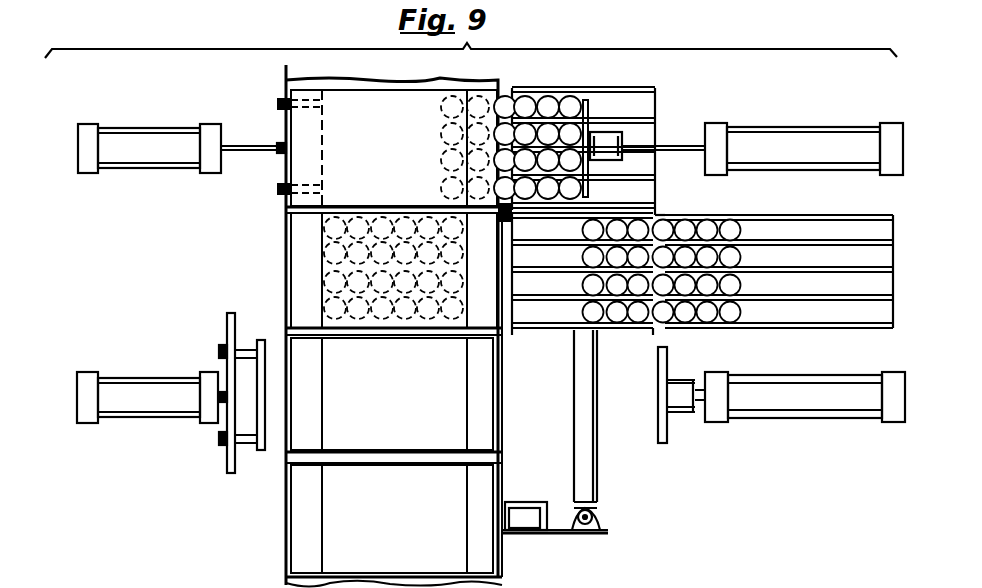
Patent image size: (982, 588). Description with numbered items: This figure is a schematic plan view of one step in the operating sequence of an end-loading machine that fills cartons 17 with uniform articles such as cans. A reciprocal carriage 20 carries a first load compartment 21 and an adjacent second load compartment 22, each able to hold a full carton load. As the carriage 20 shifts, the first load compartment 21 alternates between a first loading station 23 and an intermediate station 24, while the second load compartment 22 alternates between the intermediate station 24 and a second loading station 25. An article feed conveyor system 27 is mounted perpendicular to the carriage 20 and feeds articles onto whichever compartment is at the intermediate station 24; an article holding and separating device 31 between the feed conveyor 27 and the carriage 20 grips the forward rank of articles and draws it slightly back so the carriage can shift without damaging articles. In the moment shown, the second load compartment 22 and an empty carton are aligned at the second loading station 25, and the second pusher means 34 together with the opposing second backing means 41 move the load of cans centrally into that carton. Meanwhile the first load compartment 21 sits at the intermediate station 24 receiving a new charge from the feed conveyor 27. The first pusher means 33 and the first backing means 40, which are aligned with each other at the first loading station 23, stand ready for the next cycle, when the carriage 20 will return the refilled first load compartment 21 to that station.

The cartons 17 is at (300, 493).
The reciprocal carriage 20 is at (599, 140).
The first load compartment 21 is at (545, 318).
The second load compartment 22 is at (648, 114).
The first loading station 23 is at (562, 409).
The intermediate station 24 is at (570, 266).
The second loading station 25 is at (628, 117).
The article feed conveyor system 27 is at (795, 217).
The article holding and separating device 31 is at (667, 214).
The first pusher means 33 is at (766, 426).
The second pusher means 34 is at (782, 116).
The first backing means 40 is at (212, 427).
The second backing means 41 is at (250, 182).